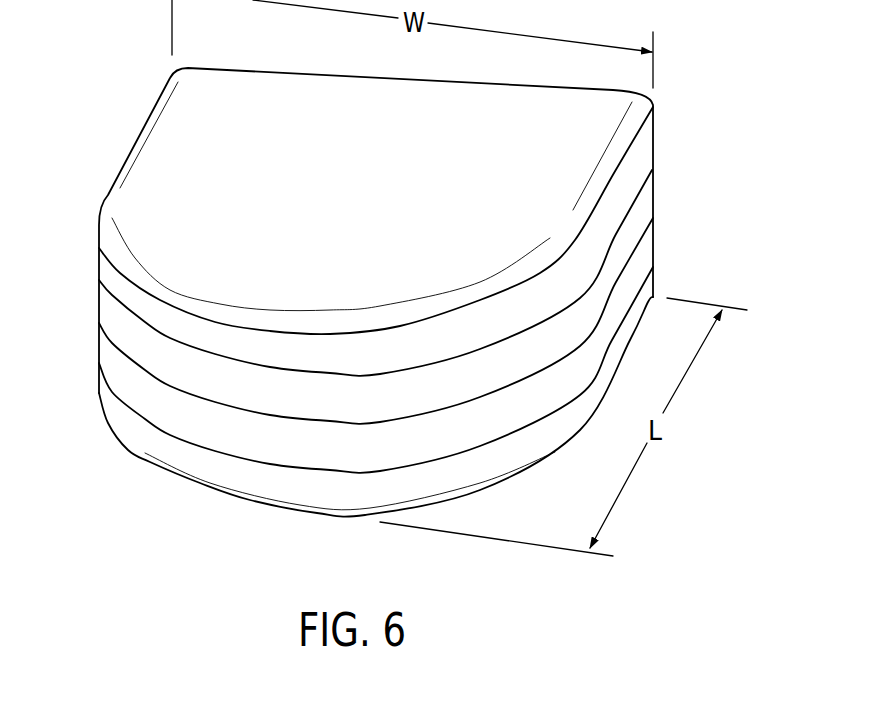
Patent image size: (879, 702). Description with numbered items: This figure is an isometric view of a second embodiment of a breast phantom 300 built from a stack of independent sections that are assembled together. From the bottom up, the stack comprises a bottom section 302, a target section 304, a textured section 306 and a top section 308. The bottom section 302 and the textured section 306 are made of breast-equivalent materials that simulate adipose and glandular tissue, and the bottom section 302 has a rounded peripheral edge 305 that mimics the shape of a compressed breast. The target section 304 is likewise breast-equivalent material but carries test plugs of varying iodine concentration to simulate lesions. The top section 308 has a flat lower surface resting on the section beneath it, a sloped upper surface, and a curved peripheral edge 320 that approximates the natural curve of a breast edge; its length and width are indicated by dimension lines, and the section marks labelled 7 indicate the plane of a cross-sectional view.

The phantom 300 is at (442, 297).
The bottom section 302 is at (607, 382).
The target section 304 is at (640, 207).
The rounded peripheral edge 305 is at (338, 512).
The textured section 306 is at (615, 302).
The top section 308 is at (345, 113).
The curved peripheral edge 320 is at (258, 322).
The section line for FIG. 7 is at (112, 172).